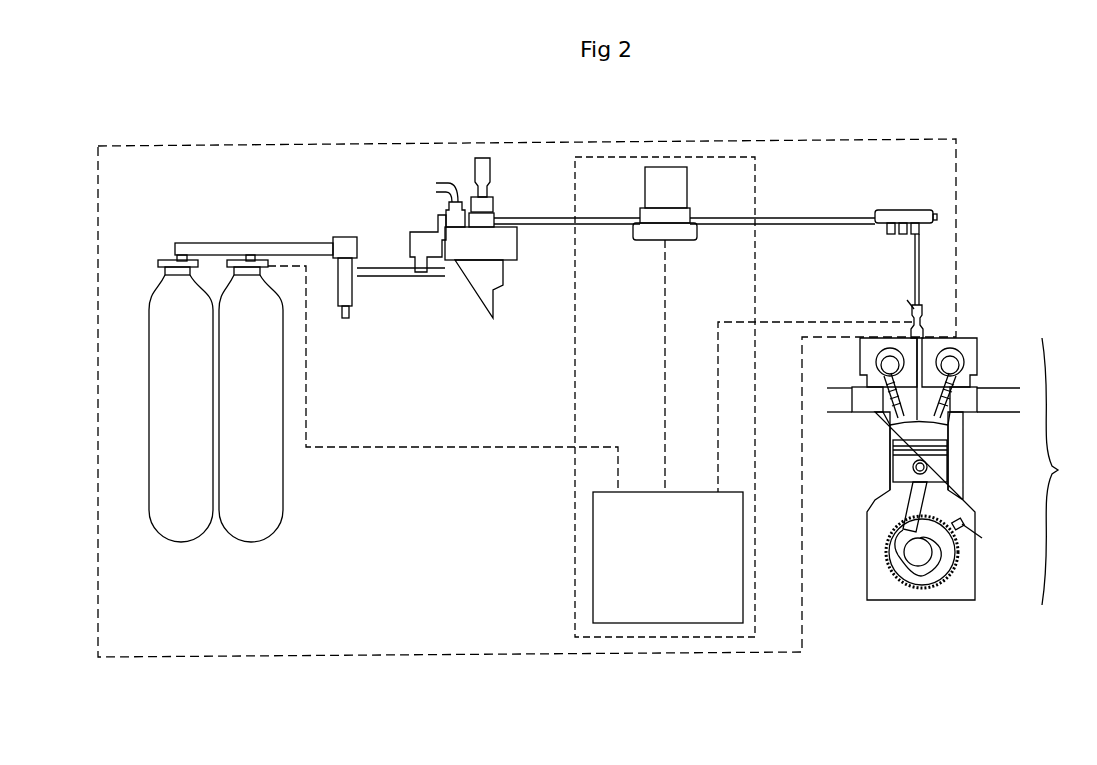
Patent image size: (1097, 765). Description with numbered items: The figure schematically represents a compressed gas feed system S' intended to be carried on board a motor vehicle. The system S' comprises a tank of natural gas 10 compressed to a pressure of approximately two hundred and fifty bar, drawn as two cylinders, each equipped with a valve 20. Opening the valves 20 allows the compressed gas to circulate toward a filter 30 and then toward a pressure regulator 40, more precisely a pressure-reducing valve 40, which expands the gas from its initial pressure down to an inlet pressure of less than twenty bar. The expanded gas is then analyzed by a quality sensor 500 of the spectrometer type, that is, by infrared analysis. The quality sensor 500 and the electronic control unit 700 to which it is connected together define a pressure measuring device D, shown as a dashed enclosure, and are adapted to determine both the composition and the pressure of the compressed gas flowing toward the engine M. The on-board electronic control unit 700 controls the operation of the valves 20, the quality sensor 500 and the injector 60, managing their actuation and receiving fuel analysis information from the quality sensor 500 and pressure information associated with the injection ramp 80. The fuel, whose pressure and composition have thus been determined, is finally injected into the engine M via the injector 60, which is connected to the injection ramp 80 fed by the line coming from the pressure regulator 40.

The tank of natural gas 10 is at (196, 510).
The valve 20 is at (250, 243).
The filter 30 is at (343, 237).
The pressure regulator 40 is at (484, 150).
The quality sensor 500 is at (710, 188).
The injection ramp 80 is at (905, 210).
The injector 60 is at (936, 320).
The electronic control unit 700 is at (695, 624).
The pressure measuring device D is at (635, 150).
The compressed gas feed system S' is at (511, 357).
The engine M is at (952, 471).